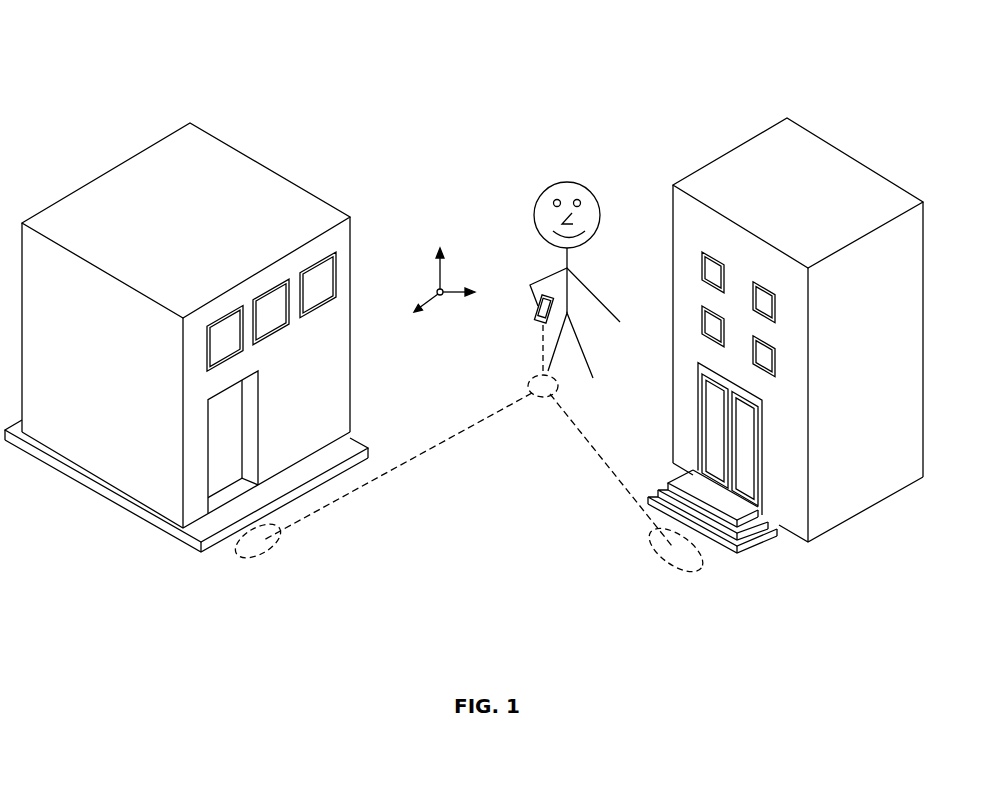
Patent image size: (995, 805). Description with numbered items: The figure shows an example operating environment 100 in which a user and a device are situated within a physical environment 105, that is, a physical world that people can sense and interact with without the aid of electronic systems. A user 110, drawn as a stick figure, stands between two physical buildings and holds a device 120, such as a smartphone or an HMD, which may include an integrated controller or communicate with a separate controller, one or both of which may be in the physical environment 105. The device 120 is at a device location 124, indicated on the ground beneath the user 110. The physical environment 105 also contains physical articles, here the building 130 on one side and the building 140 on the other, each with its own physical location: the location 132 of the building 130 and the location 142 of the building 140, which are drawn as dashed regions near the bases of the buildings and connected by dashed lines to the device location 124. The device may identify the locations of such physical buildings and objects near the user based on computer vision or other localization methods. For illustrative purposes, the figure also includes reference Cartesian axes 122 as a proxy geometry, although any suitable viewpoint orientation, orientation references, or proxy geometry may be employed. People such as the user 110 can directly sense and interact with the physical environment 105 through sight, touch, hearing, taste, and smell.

The operating environment 100 is at (77, 62).
The physical environment 105 is at (487, 106).
The user 110 is at (577, 262).
The device 120 is at (534, 311).
The reference Cartesian axes 122 is at (440, 276).
The device location 124 is at (540, 398).
The building 130 is at (723, 153).
The location of building 130 132 is at (665, 566).
The building 140 is at (305, 190).
The location of building 140 142 is at (244, 553).